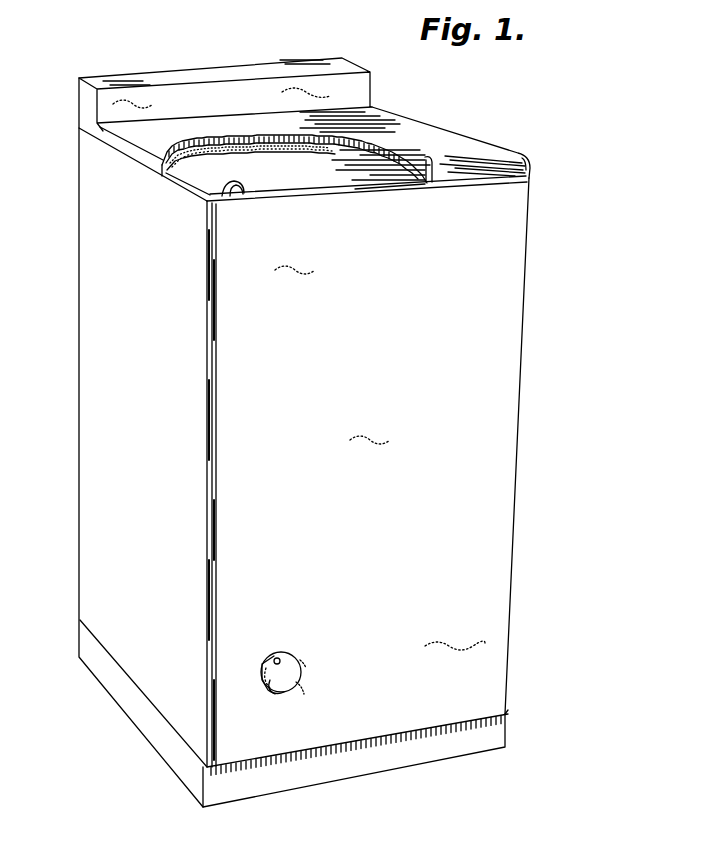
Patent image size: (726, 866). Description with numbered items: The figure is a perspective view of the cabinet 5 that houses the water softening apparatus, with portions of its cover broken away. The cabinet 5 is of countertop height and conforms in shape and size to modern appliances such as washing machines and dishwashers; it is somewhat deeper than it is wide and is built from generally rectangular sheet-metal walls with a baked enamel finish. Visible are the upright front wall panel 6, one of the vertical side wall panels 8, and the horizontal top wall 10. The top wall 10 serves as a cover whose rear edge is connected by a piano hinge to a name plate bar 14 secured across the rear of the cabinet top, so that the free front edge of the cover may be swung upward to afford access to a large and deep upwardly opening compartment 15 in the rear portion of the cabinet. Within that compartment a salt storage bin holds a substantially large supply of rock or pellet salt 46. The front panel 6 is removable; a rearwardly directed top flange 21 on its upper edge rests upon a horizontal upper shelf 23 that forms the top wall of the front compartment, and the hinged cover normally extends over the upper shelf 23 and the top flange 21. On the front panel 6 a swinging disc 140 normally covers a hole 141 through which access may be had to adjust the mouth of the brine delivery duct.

The cabinet 5 is at (578, 282).
The front wall panel 6 is at (503, 460).
The side wall panel 8 is at (91, 319).
The top wall 10 is at (452, 137).
The name plate bar 14 is at (170, 99).
The upwardly opening compartment 15 is at (345, 135).
The top flange 21 is at (355, 188).
The upper shelf 23 is at (293, 183).
The rock or pellet salt 46 is at (192, 165).
The swinging disc 140 is at (300, 660).
The hole 141 is at (273, 694).